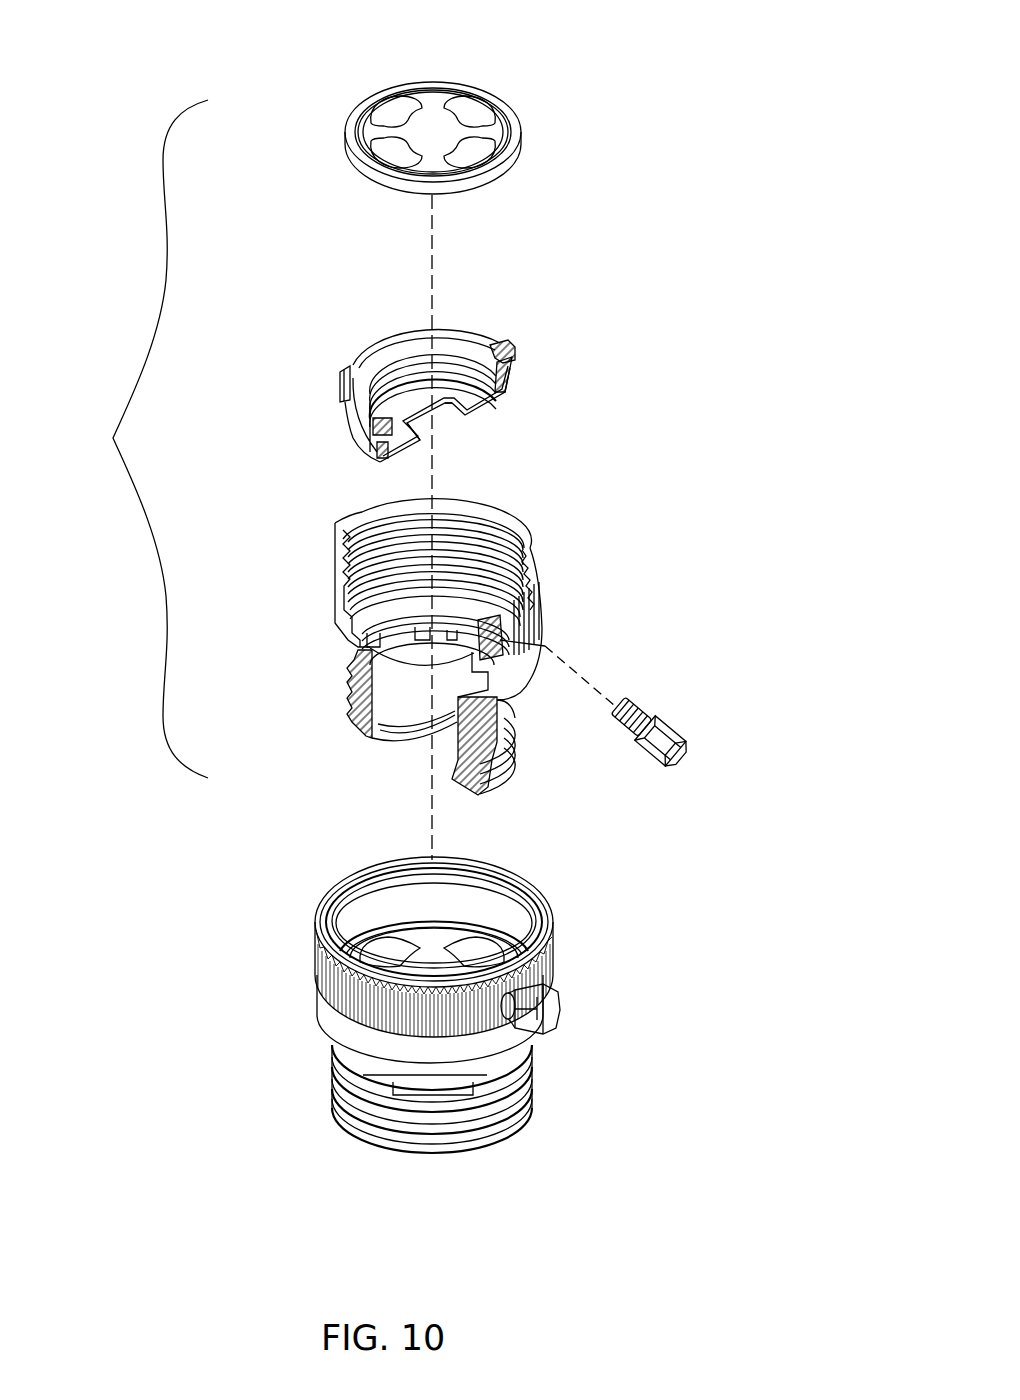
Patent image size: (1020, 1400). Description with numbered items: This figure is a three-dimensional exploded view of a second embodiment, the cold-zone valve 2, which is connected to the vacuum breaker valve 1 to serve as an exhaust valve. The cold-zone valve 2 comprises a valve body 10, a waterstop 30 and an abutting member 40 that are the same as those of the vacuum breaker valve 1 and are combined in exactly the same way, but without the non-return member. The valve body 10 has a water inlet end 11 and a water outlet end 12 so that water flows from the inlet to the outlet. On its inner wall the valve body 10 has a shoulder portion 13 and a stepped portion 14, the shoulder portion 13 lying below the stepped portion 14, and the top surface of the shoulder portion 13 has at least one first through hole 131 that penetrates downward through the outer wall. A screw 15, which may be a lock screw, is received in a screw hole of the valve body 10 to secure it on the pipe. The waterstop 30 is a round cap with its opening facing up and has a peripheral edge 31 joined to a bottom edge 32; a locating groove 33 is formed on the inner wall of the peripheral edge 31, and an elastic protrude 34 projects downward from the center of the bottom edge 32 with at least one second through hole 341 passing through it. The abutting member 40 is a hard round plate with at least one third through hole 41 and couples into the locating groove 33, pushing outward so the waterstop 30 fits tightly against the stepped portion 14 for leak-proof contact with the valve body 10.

The vacuum breaker valve 1 is at (310, 1068).
The cold-zone valve 2 is at (148, 439).
The valve body 10 is at (405, 646).
The water inlet end 11 is at (457, 557).
The water outlet end 12 is at (413, 750).
The shoulder portion 13 is at (467, 642).
The first through hole 131 is at (505, 718).
The stepped portion 14 is at (342, 614).
The screw 15 is at (638, 700).
The waterstop 30 is at (459, 382).
The peripheral edge 31 is at (513, 370).
The bottom edge 32 is at (503, 388).
The locating groove 33 is at (372, 440).
The elastic protrude 34 is at (482, 410).
The second through hole 341 is at (410, 455).
The abutting member 40 is at (496, 132).
The third through hole 41 is at (470, 108).